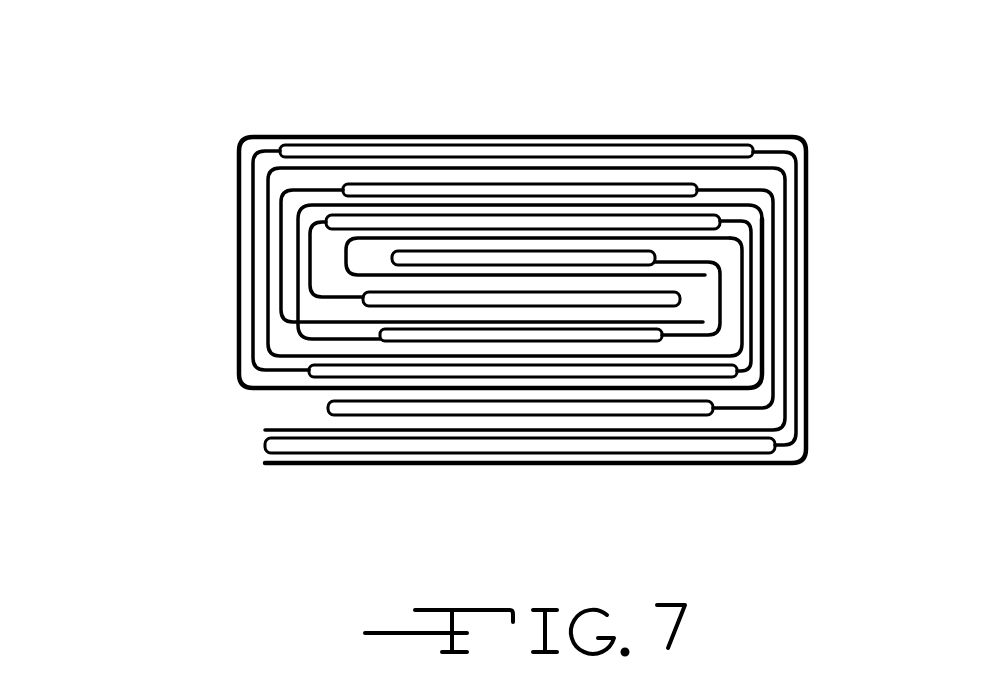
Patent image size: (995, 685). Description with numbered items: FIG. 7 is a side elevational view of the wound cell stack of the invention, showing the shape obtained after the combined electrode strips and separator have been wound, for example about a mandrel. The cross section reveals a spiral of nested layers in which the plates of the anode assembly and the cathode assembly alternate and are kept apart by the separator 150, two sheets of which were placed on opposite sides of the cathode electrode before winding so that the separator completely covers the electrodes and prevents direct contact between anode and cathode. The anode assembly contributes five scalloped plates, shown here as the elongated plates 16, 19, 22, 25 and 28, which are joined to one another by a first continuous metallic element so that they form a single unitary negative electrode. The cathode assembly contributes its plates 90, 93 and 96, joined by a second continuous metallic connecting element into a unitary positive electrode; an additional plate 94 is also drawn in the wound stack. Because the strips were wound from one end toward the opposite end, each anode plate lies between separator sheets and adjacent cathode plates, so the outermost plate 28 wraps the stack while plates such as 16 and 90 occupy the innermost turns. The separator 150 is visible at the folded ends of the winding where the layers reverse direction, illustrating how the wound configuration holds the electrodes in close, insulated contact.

The anode plate 16 is at (652, 303).
The anode plate 19 is at (672, 215).
The anode plate 22 is at (690, 370).
The anode plate 25 is at (490, 165).
The anode plate 28 is at (512, 455).
The cathode plate 90 is at (520, 262).
The cathode plate 93 is at (410, 340).
The anode plate 94 is at (370, 407).
The cathode plate 96 is at (378, 190).
The separator 150 is at (343, 262).